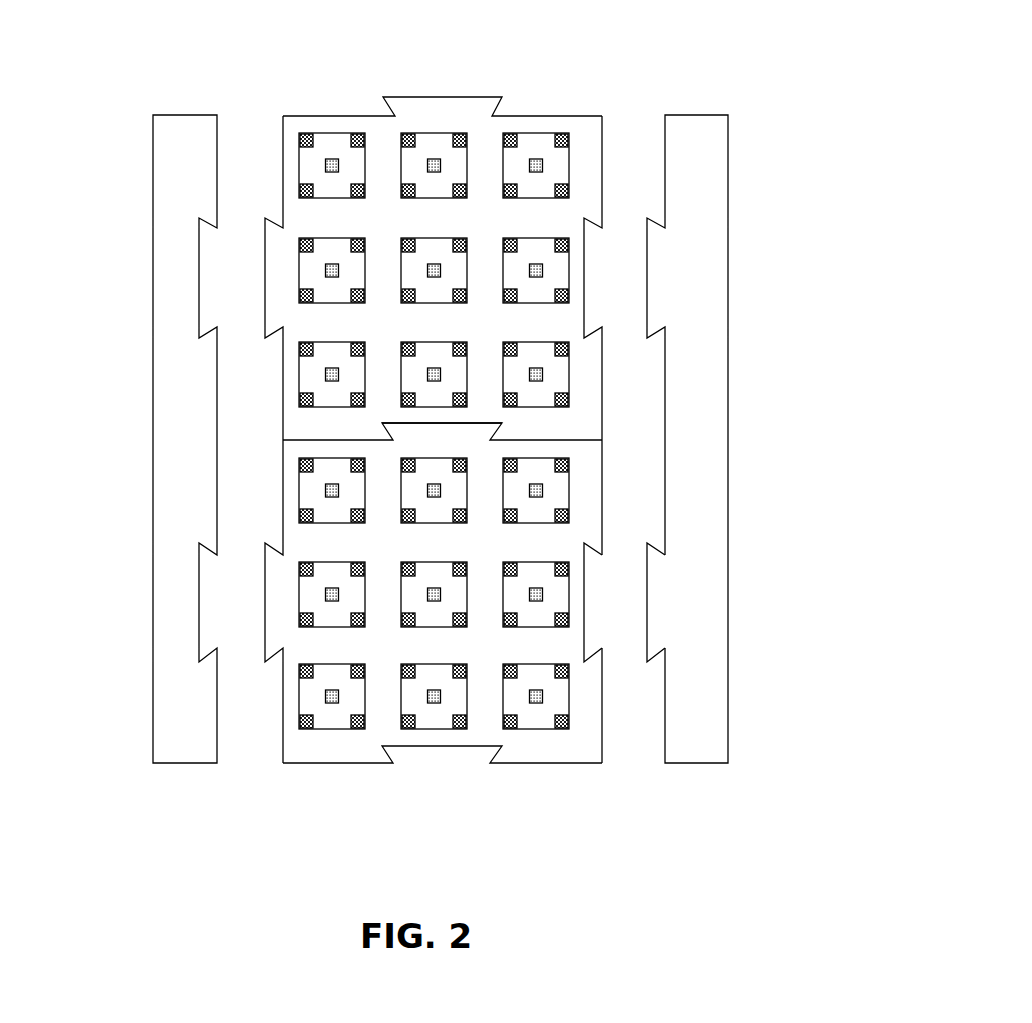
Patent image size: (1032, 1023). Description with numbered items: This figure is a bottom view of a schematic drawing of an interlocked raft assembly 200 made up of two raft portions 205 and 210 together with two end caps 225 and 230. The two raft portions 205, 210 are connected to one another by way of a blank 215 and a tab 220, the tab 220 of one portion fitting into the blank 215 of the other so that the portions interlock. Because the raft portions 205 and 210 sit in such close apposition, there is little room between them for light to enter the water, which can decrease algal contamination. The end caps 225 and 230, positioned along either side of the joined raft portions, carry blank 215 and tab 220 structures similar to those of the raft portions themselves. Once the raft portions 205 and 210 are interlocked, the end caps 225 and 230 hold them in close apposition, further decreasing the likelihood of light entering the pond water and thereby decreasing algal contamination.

The modular circuit board assembly 200 is at (441, 455).
The raft portion 205 is at (493, 132).
The raft portion 210 is at (314, 764).
The blank 215 is at (476, 418).
The tab 220 is at (423, 425).
The end cap 225 is at (168, 363).
The end cap 230 is at (710, 335).